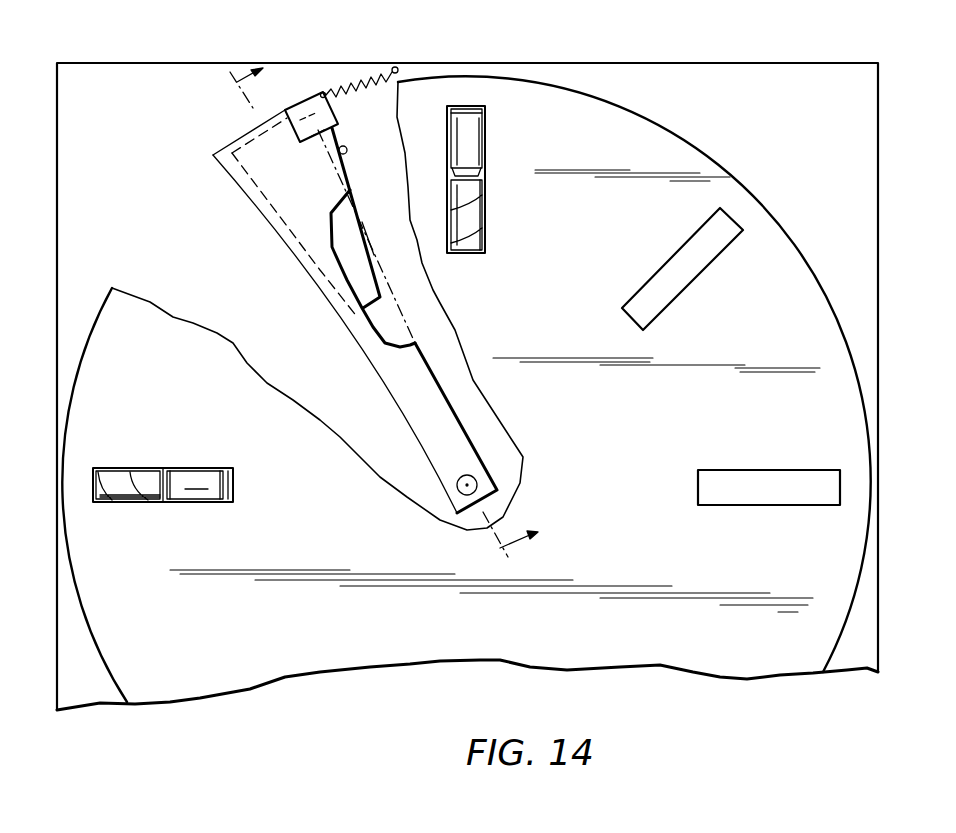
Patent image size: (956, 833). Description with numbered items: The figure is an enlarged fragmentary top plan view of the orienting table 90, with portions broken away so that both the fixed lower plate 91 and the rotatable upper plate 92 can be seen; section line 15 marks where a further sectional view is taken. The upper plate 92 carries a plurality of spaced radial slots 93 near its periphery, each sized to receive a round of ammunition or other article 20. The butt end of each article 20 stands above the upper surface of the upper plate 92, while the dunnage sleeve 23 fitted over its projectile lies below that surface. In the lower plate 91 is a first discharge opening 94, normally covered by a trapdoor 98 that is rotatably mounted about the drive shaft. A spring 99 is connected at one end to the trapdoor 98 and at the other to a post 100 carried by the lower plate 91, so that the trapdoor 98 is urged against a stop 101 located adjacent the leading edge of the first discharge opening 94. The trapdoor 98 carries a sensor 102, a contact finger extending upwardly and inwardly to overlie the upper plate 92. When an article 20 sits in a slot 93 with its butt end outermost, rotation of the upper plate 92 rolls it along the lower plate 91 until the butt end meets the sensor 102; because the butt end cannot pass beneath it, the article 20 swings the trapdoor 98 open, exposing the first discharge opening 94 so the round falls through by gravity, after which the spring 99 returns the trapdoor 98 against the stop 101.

The section line 15- 15 is at (370, 319).
The article 20 is at (473, 140).
The dunnage sleeve 23 is at (473, 208).
The orienting table 90 is at (683, 63).
The lower plate 91 is at (147, 88).
The upper plate 92 is at (568, 107).
The radial slots 93 is at (668, 307).
The first discharge opening 94 is at (350, 240).
The trapdoor 98 is at (275, 208).
The spring 99 is at (362, 75).
The post 100 is at (397, 65).
The stop 101 is at (345, 146).
The sensor 102 is at (310, 108).